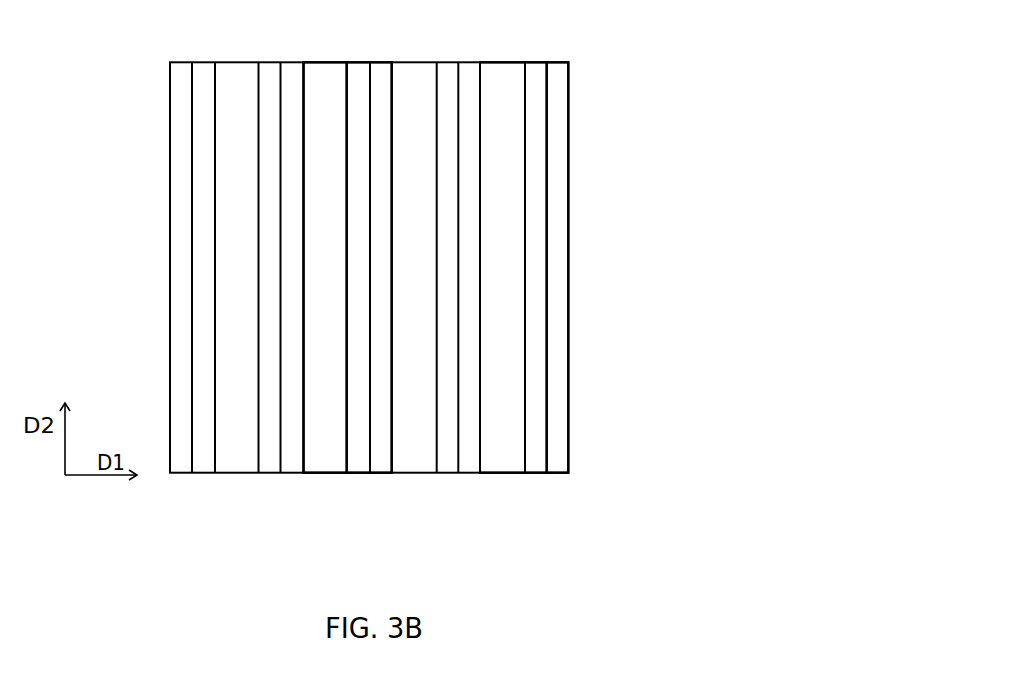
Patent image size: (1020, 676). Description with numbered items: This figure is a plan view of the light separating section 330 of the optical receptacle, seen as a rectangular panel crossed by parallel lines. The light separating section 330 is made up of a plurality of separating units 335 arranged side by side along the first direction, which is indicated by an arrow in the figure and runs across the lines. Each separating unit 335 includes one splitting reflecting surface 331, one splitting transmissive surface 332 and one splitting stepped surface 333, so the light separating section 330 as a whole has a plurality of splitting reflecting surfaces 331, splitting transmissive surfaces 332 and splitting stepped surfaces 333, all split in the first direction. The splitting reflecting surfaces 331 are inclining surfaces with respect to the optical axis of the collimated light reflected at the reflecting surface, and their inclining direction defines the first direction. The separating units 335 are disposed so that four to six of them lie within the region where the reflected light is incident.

The light separating section 330 is at (597, 72).
The splitting reflecting surface 331 is at (327, 465).
The splitting transmissive surface 332 is at (383, 465).
The splitting stepped surface 333 is at (359, 465).
The separating unit 335 is at (390, 552).